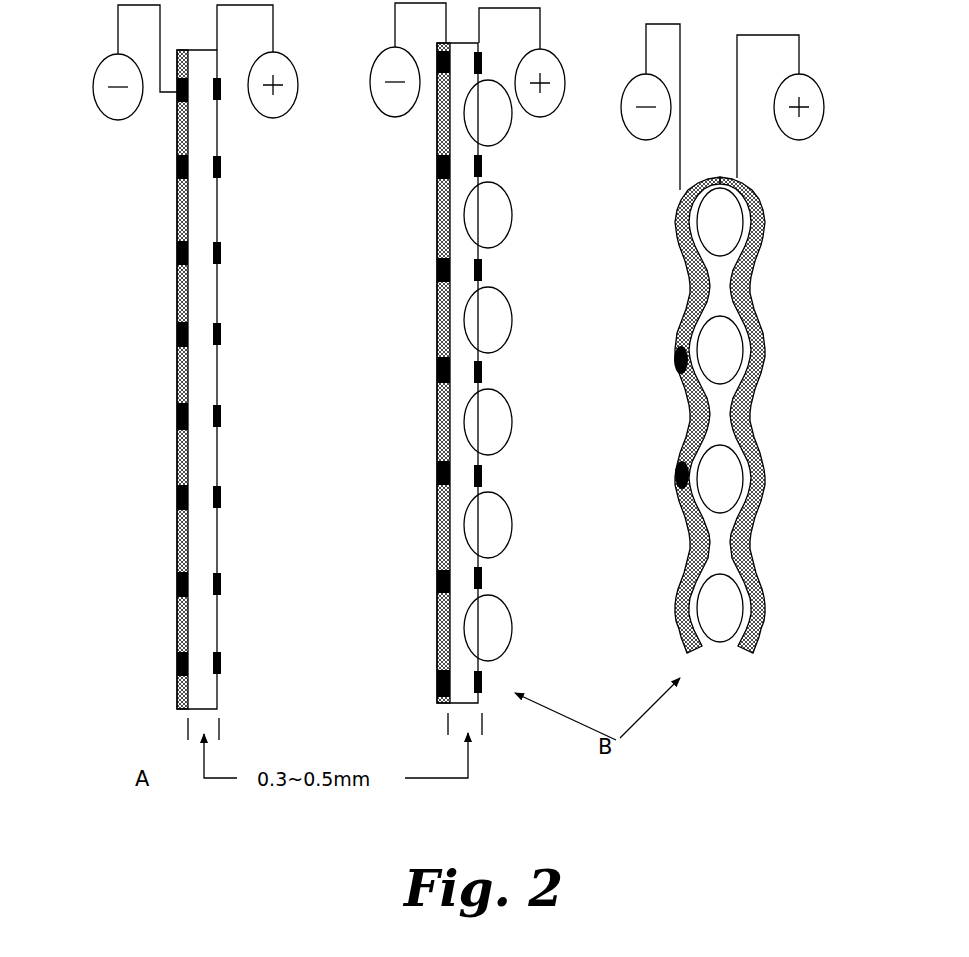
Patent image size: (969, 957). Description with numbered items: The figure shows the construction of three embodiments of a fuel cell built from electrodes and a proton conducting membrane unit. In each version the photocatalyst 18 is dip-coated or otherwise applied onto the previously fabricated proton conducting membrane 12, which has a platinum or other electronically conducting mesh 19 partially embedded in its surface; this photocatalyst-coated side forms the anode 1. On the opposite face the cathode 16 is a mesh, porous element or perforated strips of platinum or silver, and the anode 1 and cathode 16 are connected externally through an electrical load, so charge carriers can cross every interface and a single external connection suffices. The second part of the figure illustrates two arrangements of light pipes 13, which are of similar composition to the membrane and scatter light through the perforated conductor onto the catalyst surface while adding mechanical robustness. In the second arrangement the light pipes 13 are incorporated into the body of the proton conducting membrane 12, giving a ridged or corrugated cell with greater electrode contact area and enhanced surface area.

In FIG. 2A, the anode 1 is at (197, 379).
In FIG. 2A, the proton conducting membrane 12 is at (209, 300).
In FIG. 2B, the proton conducting membrane 12 is at (469, 295).
In FIG. 2B, the light pipes 13 is at (490, 325).
In FIG. 2A, the cathode 16 is at (222, 92).
In FIG. 2B, the cathode 16 is at (483, 272).
In FIG. 2A, the photocatalyst 18 is at (177, 223).
In FIG. 2B, the photocatalyst 18 is at (437, 222).
In FIG. 2A, the electronically conducting mesh 19 is at (178, 418).
In FIG. 2B, the electronically conducting mesh 19 is at (440, 383).